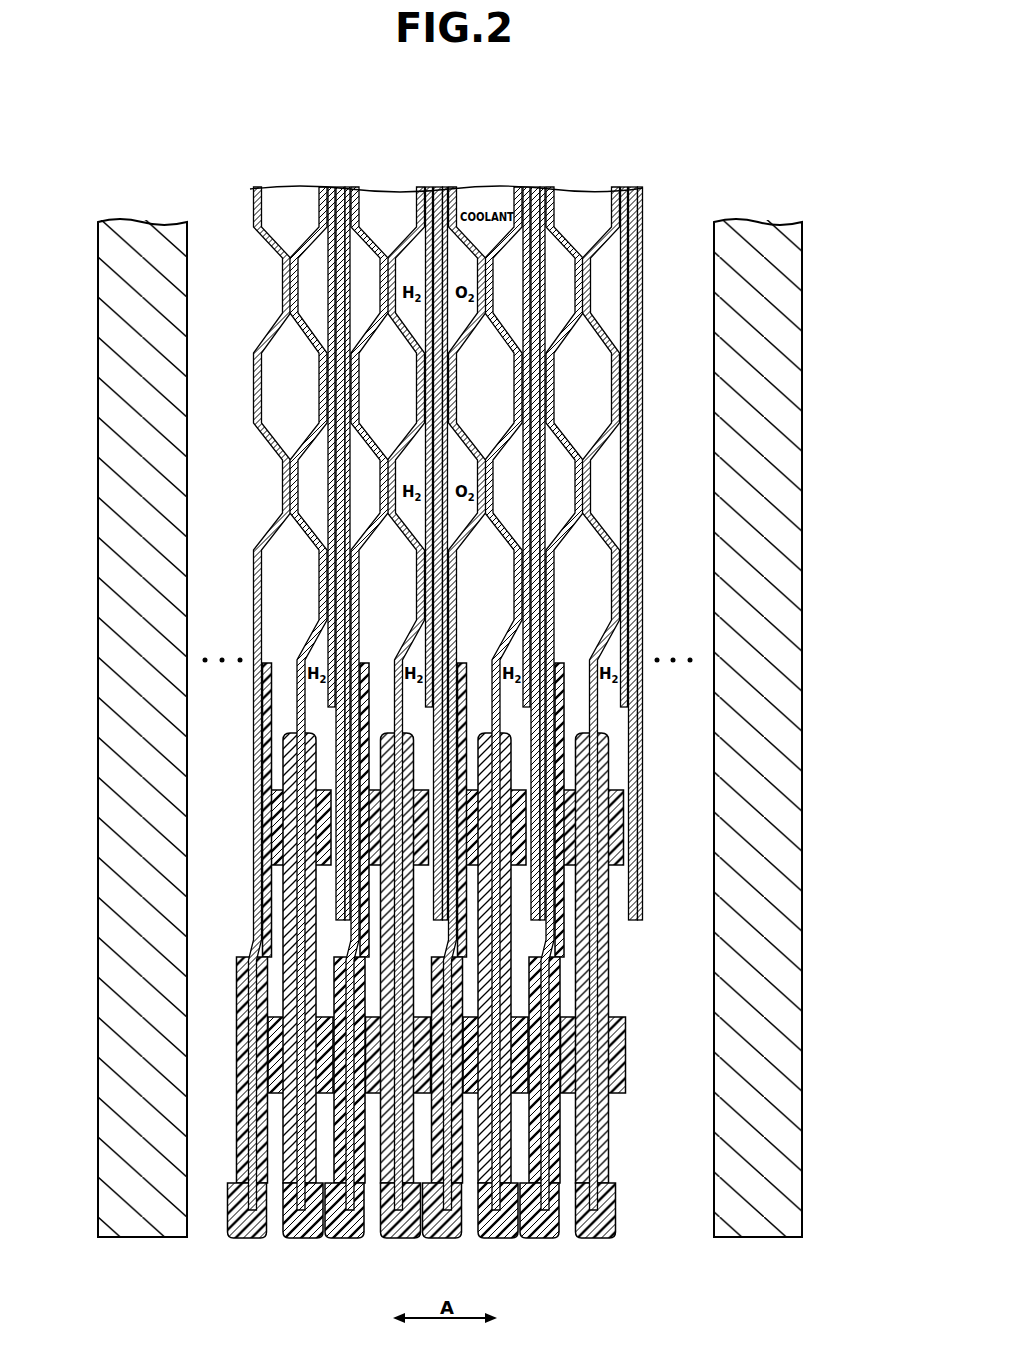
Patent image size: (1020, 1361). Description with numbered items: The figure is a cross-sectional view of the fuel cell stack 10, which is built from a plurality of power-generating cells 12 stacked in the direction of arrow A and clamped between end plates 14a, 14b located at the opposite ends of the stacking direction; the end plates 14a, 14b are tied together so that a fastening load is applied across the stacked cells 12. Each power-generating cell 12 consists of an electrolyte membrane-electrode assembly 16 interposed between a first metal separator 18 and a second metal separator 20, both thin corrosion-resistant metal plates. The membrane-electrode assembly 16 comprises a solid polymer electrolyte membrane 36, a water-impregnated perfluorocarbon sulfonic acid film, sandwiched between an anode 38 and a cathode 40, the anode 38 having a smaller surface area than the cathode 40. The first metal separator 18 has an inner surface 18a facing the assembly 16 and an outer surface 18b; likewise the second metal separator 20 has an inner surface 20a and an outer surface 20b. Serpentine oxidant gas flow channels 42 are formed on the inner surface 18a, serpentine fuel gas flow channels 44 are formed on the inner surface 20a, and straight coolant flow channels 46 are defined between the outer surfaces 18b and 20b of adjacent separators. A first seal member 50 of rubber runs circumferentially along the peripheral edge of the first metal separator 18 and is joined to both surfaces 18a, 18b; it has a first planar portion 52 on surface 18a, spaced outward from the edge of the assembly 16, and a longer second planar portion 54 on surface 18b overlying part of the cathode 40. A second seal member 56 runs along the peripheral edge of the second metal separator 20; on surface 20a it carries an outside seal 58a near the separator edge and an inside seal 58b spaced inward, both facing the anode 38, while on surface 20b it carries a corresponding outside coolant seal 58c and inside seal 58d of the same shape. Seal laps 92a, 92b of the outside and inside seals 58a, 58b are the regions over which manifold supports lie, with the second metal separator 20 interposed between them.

The fuel cell stack 10 is at (230, 119).
The power-generating cell 12 is at (530, 186).
The end plate 14a is at (118, 1237).
The end plate 14b is at (745, 1237).
The electrolyte membrane-electrode assembly 16 is at (342, 507).
The first metal separator 18 is at (372, 206).
The inner surface of first metal separator 18a is at (330, 385).
The outer surface of first metal separator 18b is at (327, 370).
The second metal separator 20 is at (312, 206).
The inner surface of second metal separator 20a is at (323, 405).
The outer surface of second metal separator 20b is at (323, 398).
The solid polymer electrolyte membrane 36 is at (340, 188).
The anode 38 is at (327, 188).
The cathode 40 is at (369, 527).
The oxidant gas flow channels 42 is at (365, 292).
The fuel gas flow channels 44 is at (312, 287).
The coolant flow channels 46 is at (580, 385).
The first seal member 50 is at (238, 1102).
The first planar portion 52 is at (440, 945).
The second planar portion 54 is at (350, 935).
The second seal member 56 is at (636, 1097).
The outside seal 58a is at (325, 1040).
The inside seal 58b is at (305, 800).
The outside seal (coolant seal) 58c is at (567, 1068).
The inside seal 58d is at (572, 812).
The seal lap 92a is at (677, 1054).
The seal lap 92b is at (613, 867).